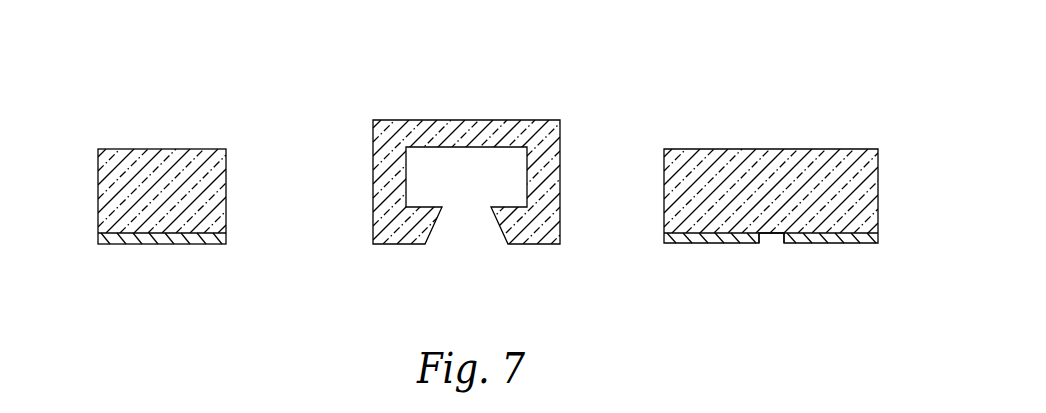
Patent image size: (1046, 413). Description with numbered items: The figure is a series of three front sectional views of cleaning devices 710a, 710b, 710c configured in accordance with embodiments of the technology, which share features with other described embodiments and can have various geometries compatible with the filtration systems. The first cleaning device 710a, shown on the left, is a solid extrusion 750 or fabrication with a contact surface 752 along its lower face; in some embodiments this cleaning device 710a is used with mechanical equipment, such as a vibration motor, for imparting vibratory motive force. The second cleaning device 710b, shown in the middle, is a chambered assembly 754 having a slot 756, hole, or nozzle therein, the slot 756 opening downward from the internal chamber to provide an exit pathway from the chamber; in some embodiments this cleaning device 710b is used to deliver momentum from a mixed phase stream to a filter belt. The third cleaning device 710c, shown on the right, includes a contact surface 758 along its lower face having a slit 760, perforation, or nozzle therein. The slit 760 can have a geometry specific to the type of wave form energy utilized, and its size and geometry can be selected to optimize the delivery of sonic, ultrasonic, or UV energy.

The cleaning device 710a is at (185, 181).
The cleaning device 710b is at (489, 174).
The cleaning device 710c is at (783, 187).
The solid extrusion 750 is at (163, 148).
The contact surface 752 is at (227, 245).
The chambered assembly 754 is at (537, 245).
The slot 756 is at (465, 223).
The contact surface 758 is at (865, 245).
The slit 760 is at (774, 248).